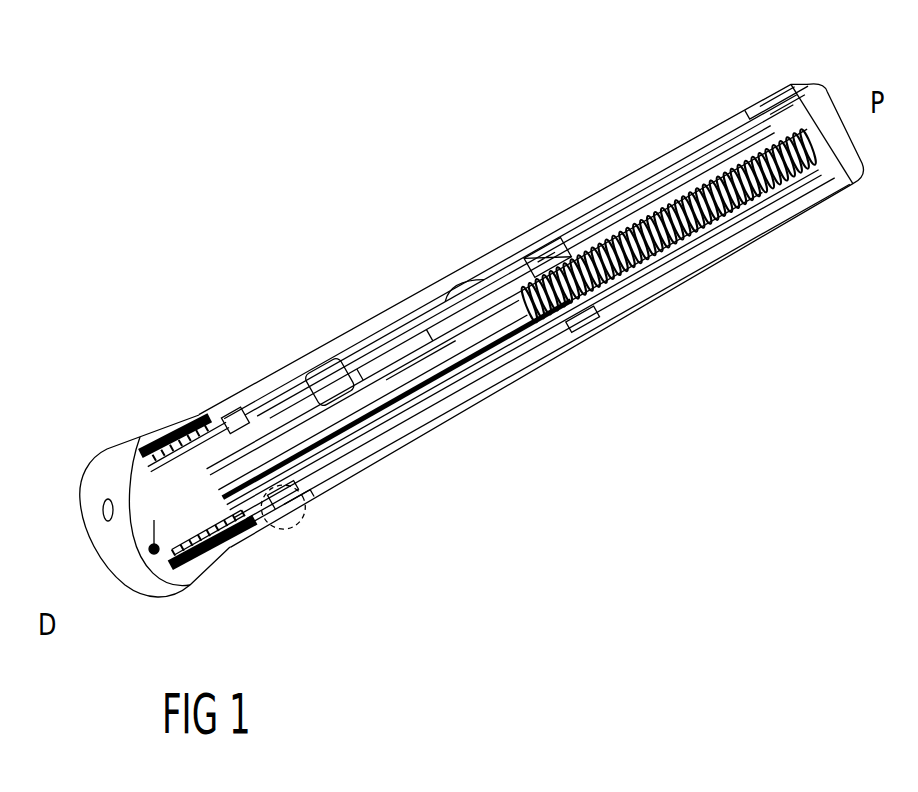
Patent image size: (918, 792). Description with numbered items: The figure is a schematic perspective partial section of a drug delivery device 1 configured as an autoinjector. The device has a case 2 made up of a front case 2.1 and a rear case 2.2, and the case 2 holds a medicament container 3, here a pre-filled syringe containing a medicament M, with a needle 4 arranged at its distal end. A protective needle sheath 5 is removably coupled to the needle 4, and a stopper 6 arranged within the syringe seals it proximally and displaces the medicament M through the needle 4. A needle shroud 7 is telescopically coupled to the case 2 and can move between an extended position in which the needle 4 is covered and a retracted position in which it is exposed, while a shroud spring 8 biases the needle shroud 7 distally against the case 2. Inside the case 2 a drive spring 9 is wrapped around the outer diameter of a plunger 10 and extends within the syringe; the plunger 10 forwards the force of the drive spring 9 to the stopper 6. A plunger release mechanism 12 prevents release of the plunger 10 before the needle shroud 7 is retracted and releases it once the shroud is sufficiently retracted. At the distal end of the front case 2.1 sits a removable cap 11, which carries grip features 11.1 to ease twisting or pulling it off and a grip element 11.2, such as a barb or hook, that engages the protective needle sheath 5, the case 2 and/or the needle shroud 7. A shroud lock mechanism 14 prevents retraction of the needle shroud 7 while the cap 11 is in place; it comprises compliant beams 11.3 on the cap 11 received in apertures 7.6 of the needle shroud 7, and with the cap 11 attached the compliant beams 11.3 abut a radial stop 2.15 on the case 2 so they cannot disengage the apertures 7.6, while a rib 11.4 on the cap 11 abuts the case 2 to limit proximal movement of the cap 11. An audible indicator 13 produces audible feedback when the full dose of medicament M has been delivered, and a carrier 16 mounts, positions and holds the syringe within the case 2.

The drug delivery device 1 is at (229, 275).
The case 2 is at (675, 110).
The front case 2.1 is at (430, 298).
The rear case 2.2 is at (762, 136).
The radial stop 2.15 is at (300, 507).
The medicament container 3 is at (345, 395).
The needle 4 is at (193, 537).
The protective needle sheath 5 is at (153, 540).
The stopper 6 is at (503, 340).
The needle shroud 7 is at (330, 452).
The apertures 7.6 is at (263, 517).
The shroud spring 8 is at (235, 420).
The drive spring 9 is at (640, 270).
The plunger 10 is at (549, 255).
The cap 11 is at (108, 540).
The grip features 11.1 is at (150, 452).
The grip element 11.2 is at (170, 547).
The compliant beams 11.3 is at (287, 490).
The rib 11.4 is at (205, 440).
The plunger release mechanism 12 is at (582, 322).
The audible indicator 13 is at (652, 210).
The shroud lock mechanism 14 is at (300, 500).
The carrier 16 is at (392, 352).
The medicament M is at (425, 370).